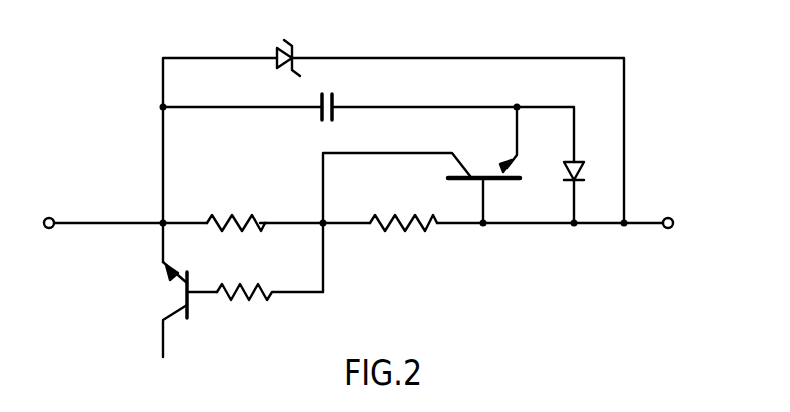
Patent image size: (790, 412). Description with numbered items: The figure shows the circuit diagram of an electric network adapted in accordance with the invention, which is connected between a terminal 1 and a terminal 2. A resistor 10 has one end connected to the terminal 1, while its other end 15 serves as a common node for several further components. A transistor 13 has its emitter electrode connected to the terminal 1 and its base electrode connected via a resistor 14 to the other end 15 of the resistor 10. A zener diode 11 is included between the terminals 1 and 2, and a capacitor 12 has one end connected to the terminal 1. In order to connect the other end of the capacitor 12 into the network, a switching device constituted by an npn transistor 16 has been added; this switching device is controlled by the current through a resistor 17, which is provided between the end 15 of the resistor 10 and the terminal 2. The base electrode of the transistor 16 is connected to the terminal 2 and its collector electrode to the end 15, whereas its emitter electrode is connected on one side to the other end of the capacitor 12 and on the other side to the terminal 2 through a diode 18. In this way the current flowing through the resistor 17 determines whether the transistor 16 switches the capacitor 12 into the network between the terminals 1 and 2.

The terminal 1 is at (51, 216).
The terminal 2 is at (672, 216).
The resistor 10 is at (248, 213).
The zener diode 11 is at (296, 53).
The capacitor 12 is at (335, 101).
The transistor 13 is at (190, 306).
The resistor 14 is at (247, 285).
The other end of resistor 15 is at (268, 216).
The npn transistor 16 is at (492, 172).
The resistor 17 is at (402, 218).
The diode 18 is at (563, 168).